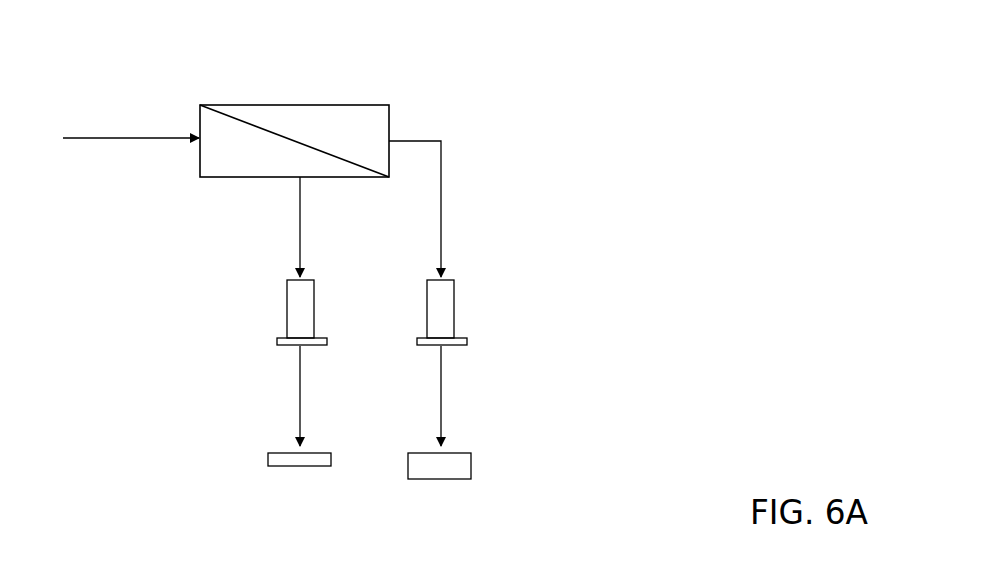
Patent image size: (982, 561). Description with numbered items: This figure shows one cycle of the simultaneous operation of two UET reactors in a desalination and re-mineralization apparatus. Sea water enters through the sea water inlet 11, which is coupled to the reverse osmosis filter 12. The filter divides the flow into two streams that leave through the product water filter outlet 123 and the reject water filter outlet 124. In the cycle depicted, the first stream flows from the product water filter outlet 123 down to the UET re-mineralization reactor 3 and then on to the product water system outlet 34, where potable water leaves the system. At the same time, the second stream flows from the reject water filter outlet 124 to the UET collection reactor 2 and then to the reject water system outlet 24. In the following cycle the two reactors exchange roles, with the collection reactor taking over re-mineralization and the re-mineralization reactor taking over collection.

The sea water inlet 11 is at (123, 135).
The reverse osmosis filter 12 is at (305, 112).
The product water filter outlet 123 is at (297, 200).
The reject water filter outlet 124 is at (414, 140).
The UET re-mineralization reactor 3 is at (294, 316).
The UET collection reactor 2 is at (449, 308).
The product water system outlet 34 is at (276, 458).
The reject water system outlet 24 is at (463, 460).